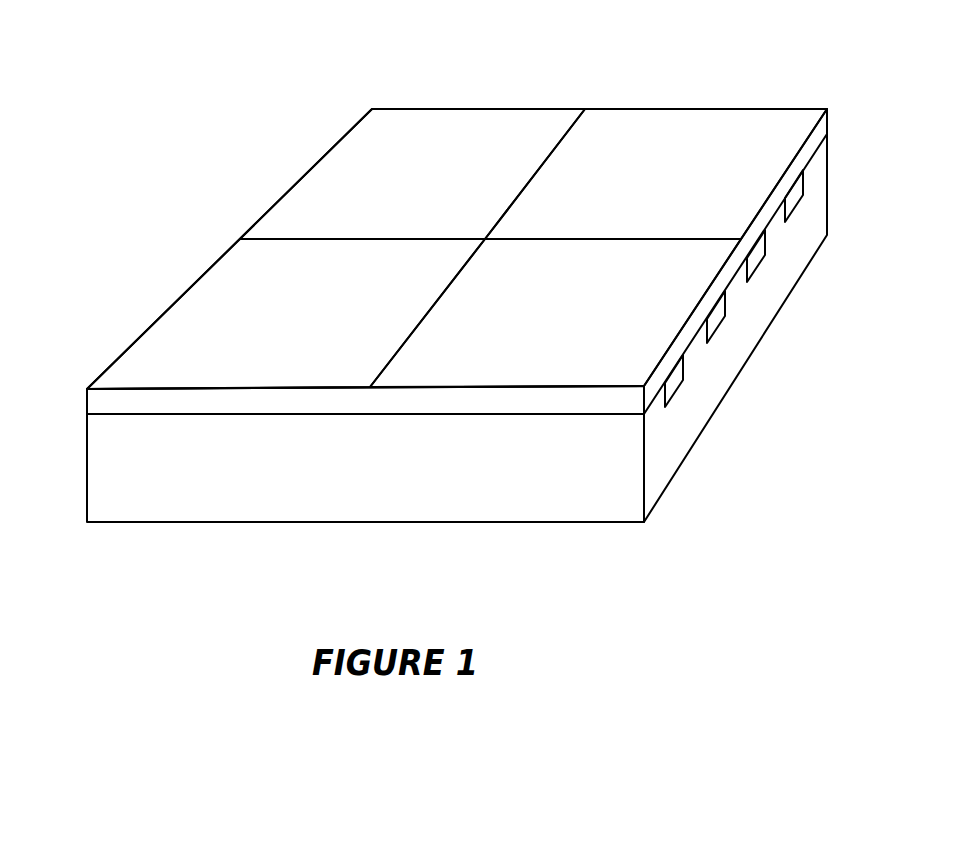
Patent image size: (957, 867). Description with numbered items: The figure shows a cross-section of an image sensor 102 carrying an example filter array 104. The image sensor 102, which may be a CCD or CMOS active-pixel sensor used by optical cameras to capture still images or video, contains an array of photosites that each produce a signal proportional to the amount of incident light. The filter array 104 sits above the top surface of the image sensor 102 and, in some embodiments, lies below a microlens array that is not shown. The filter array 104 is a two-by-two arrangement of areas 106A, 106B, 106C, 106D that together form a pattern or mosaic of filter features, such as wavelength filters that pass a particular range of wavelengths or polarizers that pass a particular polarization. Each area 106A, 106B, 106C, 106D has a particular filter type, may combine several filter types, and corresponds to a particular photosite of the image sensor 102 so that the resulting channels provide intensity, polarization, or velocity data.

The image sensor 102 is at (807, 212).
The filter array 104 is at (648, 128).
The area 106A is at (453, 177).
The area 106B is at (668, 186).
The area 106C is at (603, 321).
The area 106D is at (342, 319).